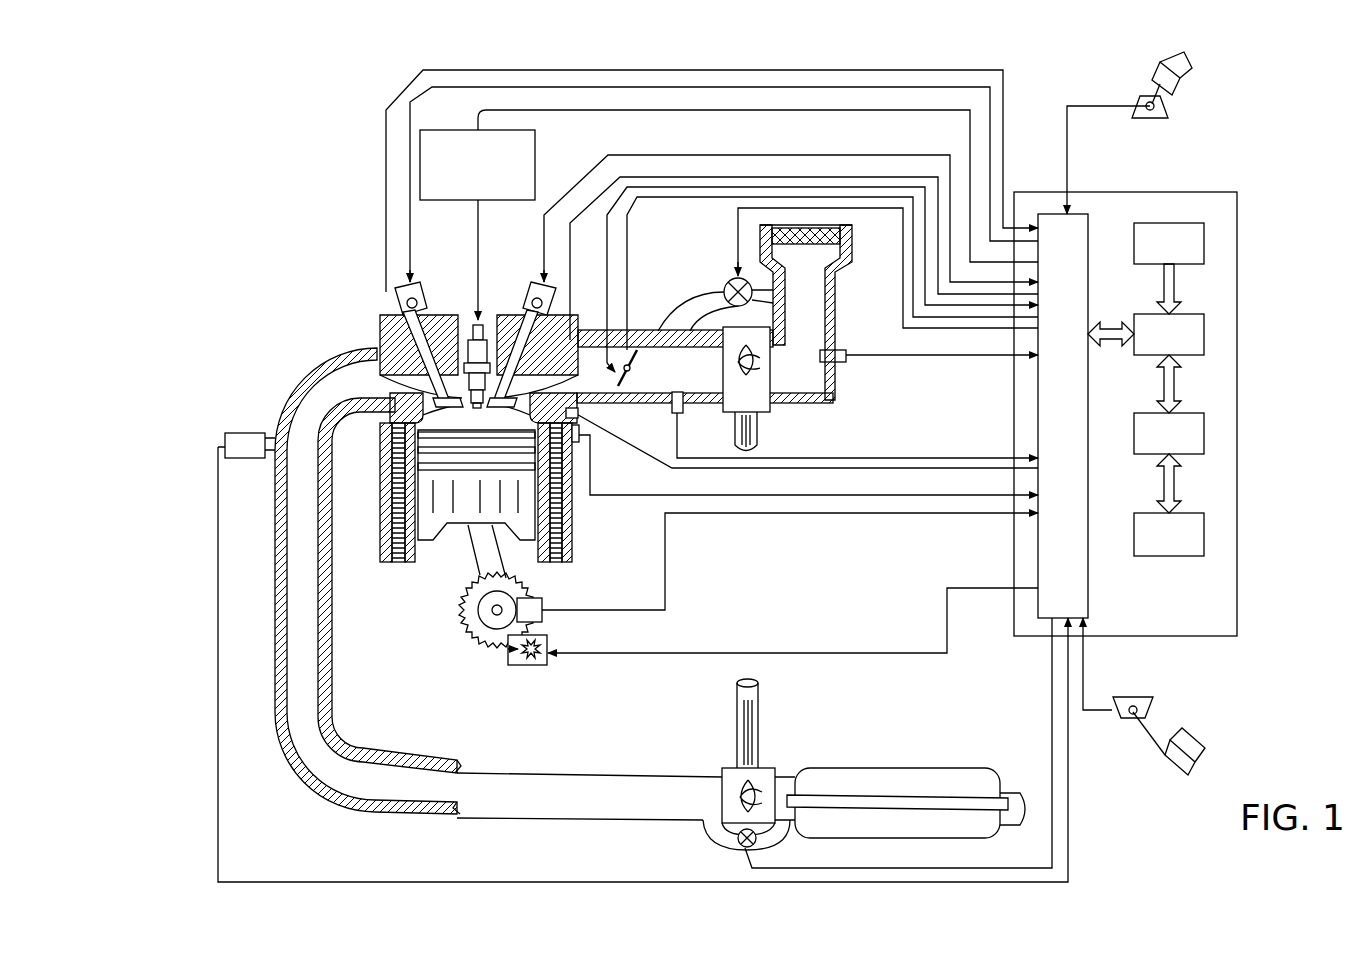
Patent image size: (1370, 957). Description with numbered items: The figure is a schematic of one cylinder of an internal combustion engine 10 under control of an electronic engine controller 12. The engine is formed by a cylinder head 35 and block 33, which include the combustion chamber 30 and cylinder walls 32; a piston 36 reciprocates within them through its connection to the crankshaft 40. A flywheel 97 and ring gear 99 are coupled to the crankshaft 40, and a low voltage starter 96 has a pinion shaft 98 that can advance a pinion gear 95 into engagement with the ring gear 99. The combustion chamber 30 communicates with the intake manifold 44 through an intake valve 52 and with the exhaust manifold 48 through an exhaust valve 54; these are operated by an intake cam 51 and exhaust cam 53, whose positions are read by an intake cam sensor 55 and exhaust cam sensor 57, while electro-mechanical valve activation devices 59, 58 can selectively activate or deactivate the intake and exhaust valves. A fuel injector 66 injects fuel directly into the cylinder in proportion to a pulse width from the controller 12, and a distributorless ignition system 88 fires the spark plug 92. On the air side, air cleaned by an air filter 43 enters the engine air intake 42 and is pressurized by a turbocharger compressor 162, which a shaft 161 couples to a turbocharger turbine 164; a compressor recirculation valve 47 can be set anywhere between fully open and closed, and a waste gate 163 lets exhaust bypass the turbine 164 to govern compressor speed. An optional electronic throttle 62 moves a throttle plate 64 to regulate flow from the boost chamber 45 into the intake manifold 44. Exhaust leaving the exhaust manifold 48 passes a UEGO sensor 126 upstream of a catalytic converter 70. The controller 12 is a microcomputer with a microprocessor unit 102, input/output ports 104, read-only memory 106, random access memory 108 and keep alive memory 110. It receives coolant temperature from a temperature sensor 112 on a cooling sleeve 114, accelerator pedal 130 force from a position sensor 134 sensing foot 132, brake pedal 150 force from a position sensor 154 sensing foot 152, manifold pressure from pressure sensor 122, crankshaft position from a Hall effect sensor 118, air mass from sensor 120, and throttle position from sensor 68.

The internal combustion engine 10 is at (318, 272).
The electronic engine controller 12 is at (1237, 198).
The combustion chamber 30 is at (388, 528).
The cylinder walls 32 is at (422, 555).
The block 33 is at (378, 458).
The cylinder head 35 is at (378, 320).
The piston 36 is at (455, 545).
The crankshaft 40 is at (478, 630).
The engine air intake 42 is at (682, 248).
The air filter 43 is at (820, 243).
The intake manifold 44 is at (602, 384).
The boost chamber 45 is at (698, 384).
The compressor recirculation valve 47 is at (728, 282).
The exhaust manifold 48 is at (358, 389).
The intake cam 51 is at (533, 290).
The intake valve 52 is at (492, 372).
The exhaust cam 53 is at (426, 292).
The exhaust valve 54 is at (400, 362).
The intake cam sensor 55 is at (555, 306).
The exhaust cam sensor 57 is at (400, 296).
The valve activation device 58 is at (428, 304).
The valve activation device 59 is at (534, 314).
The electronic throttle 62 is at (634, 364).
The throttle plate 64 is at (636, 380).
The fuel injector 66 is at (580, 428).
The throttle position sensor 68 is at (580, 345).
The catalytic converter 70 is at (832, 768).
The distributorless ignition system 88 is at (432, 130).
The spark plug 92 is at (488, 330).
The pinion gear 95 is at (534, 666).
The starter 96 is at (547, 664).
The flywheel 97 is at (470, 608).
The pinion shaft 98 is at (522, 660).
The ring gear 99 is at (490, 647).
The microprocessor unit 102 is at (1204, 335).
The input/output ports 104 is at (1088, 226).
The read-only memory 106 is at (1204, 240).
The random access memory 108 is at (1204, 432).
The keep alive memory 110 is at (1204, 535).
The temperature sensor 112 is at (585, 445).
The cooling sleeve 114 is at (580, 515).
The Hall effect sensor 118 is at (542, 600).
The air mass sensor 120 is at (840, 350).
The pressure sensor 122 is at (672, 412).
The Universal Exhaust Gas Oxygen sensor 126 is at (225, 437).
The accelerator pedal 130 is at (1132, 90).
The foot 132 is at (1186, 72).
The position sensor 134 is at (1168, 112).
The brake pedal 150 is at (1160, 758).
The foot 152 is at (1188, 728).
The position sensor 154 is at (1118, 706).
The shaft 161 is at (735, 425).
The turbocharger compressor 162 is at (758, 392).
The waste gate 163 is at (742, 850).
The turbocharger turbine 164 is at (722, 768).